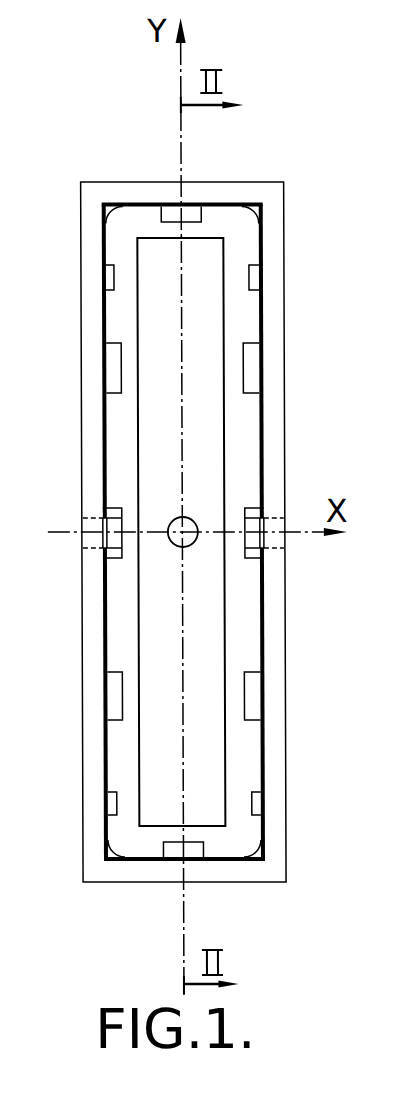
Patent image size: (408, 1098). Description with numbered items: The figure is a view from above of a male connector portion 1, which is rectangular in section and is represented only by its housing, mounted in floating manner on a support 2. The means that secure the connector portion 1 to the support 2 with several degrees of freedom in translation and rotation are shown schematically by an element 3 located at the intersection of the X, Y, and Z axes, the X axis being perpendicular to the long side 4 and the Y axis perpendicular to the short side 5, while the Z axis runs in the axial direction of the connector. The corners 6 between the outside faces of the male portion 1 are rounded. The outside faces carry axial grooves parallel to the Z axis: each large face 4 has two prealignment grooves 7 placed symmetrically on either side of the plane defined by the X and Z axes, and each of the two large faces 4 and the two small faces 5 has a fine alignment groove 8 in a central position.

The male connector portion 1 is at (236, 421).
The support 2 is at (268, 206).
The element 3 is at (189, 547).
The long side 4 is at (101, 615).
The short side 5 is at (139, 202).
The corners 6 is at (102, 202).
The prealignment grooves 7 is at (116, 363).
The fine alignment groove 8 is at (188, 217).